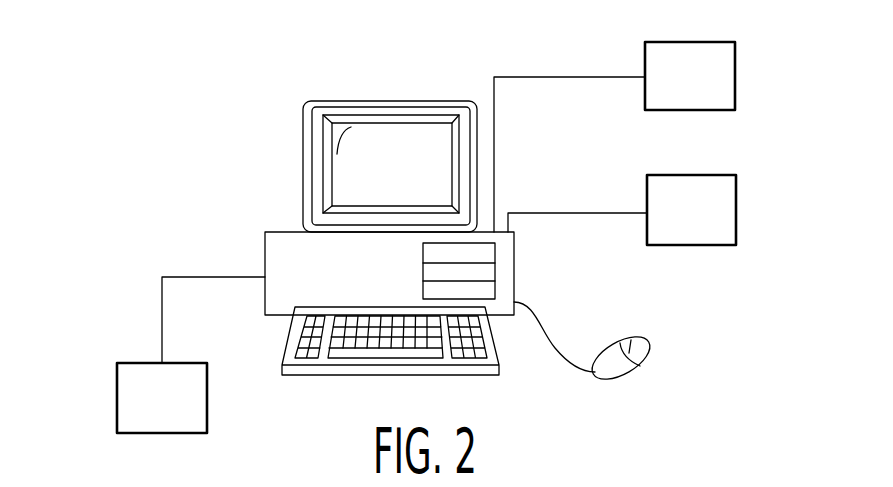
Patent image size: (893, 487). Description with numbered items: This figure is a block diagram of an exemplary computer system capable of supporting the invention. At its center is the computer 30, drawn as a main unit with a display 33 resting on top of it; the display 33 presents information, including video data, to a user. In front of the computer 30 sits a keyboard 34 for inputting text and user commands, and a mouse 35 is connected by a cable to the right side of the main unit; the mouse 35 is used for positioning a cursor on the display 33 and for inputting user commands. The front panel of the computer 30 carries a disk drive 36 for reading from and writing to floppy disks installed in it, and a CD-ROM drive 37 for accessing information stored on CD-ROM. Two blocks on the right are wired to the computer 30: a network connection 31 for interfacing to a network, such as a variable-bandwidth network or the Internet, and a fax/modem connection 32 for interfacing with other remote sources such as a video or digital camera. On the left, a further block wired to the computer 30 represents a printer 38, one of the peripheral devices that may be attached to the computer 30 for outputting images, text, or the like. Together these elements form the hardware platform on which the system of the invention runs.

The computer 30 is at (168, 134).
The network connection 31 is at (737, 62).
The fax/modem connection 32 is at (737, 202).
The display 33 is at (357, 101).
The keyboard 34 is at (287, 383).
The mouse 35 is at (620, 363).
The disk drive 36 is at (495, 253).
The CD-ROM drive 37 is at (482, 270).
The printer 38 is at (117, 390).